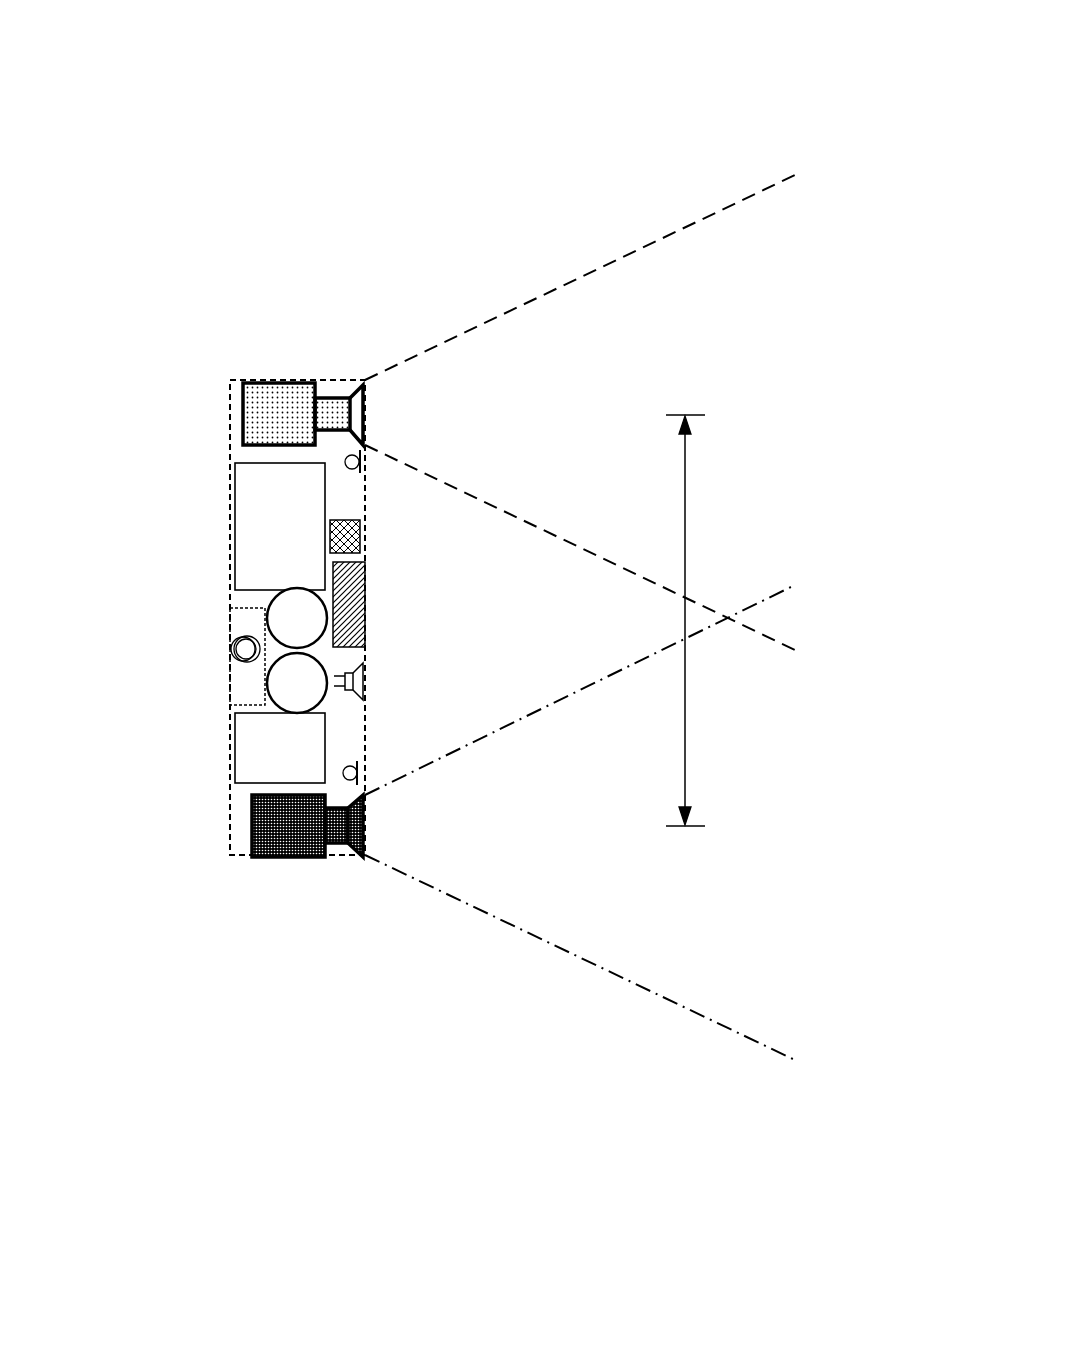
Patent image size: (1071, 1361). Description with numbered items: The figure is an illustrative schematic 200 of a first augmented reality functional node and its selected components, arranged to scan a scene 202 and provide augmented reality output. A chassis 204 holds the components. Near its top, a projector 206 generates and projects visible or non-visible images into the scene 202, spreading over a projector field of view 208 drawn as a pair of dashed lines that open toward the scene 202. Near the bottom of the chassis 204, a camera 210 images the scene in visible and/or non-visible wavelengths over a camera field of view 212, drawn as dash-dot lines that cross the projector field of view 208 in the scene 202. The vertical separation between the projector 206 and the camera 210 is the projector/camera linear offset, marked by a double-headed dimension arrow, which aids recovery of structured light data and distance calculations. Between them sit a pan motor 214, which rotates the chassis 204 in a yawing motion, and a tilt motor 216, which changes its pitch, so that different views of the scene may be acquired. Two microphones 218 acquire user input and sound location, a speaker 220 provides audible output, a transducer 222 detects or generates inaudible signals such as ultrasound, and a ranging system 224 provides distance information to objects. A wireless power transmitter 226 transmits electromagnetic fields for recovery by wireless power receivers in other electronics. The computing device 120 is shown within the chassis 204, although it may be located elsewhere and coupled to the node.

The illustrative schematic 200 is at (752, 34).
The chassis 204 is at (300, 378).
The projector 206 is at (278, 413).
The projector field of view 208 is at (583, 276).
The camera 210 is at (255, 852).
The camera field of view 212 is at (530, 938).
The pan motor 214 is at (273, 603).
The tilt motor 216 is at (270, 682).
The microphone 218 is at (362, 458).
The speaker 220 is at (364, 680).
The transducer 222 is at (355, 527).
The ranging system 224 is at (365, 598).
The wireless power transmitter 226 is at (235, 650).
The computing device 120 is at (280, 525).
The scene 202 is at (831, 620).